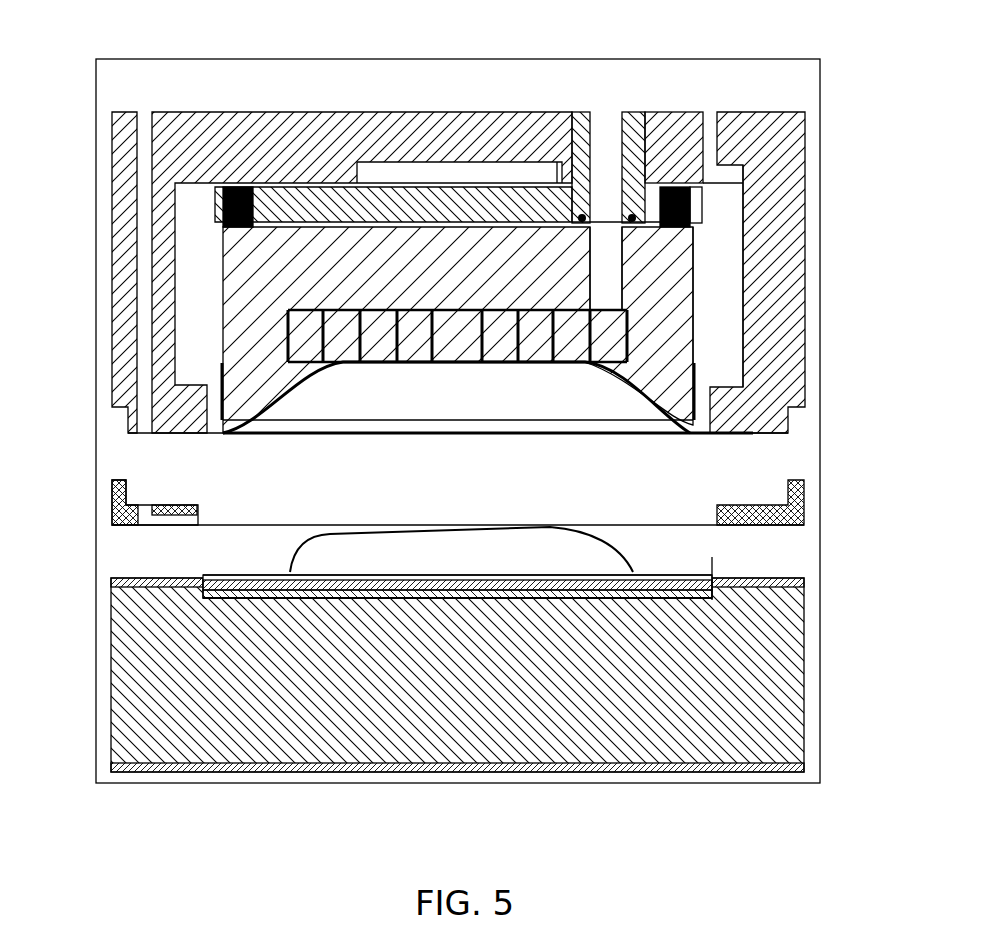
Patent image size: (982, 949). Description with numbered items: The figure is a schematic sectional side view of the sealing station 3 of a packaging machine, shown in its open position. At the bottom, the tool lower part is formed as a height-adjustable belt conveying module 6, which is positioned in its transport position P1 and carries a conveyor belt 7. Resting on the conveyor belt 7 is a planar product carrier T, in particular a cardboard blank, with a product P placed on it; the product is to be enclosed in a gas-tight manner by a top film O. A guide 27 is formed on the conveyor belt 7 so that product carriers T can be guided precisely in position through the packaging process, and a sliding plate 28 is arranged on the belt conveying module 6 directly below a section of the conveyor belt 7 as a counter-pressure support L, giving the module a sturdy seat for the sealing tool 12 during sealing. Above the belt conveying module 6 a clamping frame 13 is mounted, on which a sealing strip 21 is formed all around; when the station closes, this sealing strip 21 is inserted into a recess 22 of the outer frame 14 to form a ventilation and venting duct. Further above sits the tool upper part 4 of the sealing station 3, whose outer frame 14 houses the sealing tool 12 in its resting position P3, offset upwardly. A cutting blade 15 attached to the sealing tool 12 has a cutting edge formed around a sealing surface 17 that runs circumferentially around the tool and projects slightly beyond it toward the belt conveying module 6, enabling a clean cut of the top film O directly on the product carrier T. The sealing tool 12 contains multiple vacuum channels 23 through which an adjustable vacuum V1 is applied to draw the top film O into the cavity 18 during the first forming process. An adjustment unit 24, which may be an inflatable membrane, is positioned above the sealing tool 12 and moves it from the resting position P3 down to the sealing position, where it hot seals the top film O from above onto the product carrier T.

The sealing station 3 is at (557, 93).
The tool upper part 4 is at (437, 112).
The adjustment unit 24 is at (347, 202).
The recess 22 is at (126, 422).
The outer frame 14 is at (790, 308).
The sealing tool 12 is at (310, 279).
The vacuum V1 is at (600, 258).
The resting position P3 is at (703, 273).
The vacuum channels 23 is at (427, 350).
The cutting blade 15 is at (222, 372).
The cavity 18 is at (475, 413).
The sealing surface 17 is at (224, 433).
The top film O is at (372, 433).
The sealing strip 21 is at (111, 488).
The clamping frame 13 is at (745, 505).
The product P is at (548, 563).
The product carrier T is at (268, 572).
The belt conveying module 6 is at (150, 756).
The conveyor belt 7 is at (142, 578).
The sliding plate 28 is at (422, 599).
The guide 27 is at (713, 562).
The counter-pressure support L is at (290, 610).
The transport position P1 is at (372, 773).